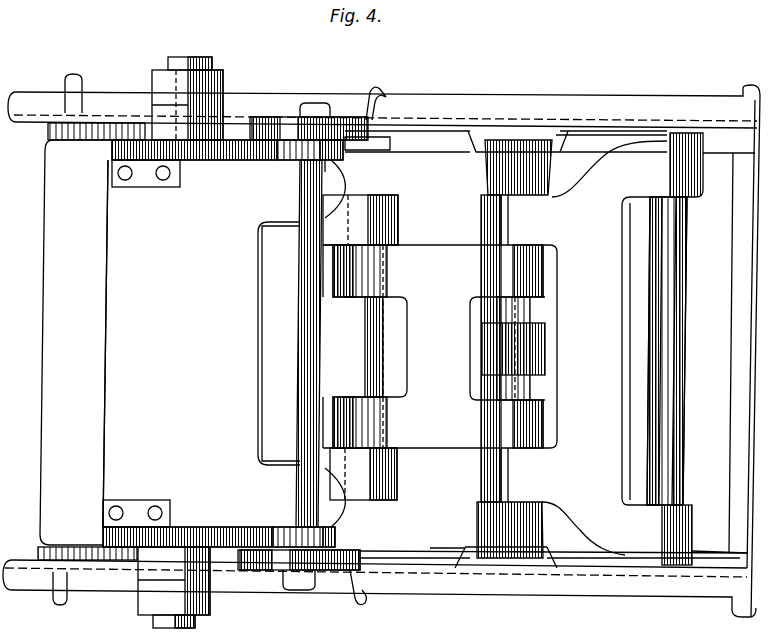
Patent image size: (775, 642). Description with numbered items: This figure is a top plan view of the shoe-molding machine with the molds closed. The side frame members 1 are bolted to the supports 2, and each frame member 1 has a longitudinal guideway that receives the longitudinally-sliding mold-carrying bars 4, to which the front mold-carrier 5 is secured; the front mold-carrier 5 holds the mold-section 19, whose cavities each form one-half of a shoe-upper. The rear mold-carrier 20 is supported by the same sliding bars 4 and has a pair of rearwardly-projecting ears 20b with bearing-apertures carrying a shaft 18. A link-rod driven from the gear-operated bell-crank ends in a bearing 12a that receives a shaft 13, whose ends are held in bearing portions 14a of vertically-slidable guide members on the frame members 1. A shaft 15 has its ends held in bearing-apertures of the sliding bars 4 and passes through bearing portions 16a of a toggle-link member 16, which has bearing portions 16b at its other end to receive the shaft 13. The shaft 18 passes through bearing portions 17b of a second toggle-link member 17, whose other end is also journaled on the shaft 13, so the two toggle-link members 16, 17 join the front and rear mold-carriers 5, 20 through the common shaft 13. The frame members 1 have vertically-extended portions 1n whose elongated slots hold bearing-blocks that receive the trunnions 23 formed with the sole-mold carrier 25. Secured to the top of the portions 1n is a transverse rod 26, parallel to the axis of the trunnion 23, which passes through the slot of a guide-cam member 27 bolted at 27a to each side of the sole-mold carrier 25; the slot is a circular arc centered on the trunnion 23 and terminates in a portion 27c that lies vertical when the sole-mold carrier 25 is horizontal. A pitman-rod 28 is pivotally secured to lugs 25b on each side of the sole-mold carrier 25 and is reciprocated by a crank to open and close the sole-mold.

The side frame member 1 is at (432, 108).
The vertically-extended portion 1n is at (292, 125).
The support 2 is at (735, 393).
The mold-carrying bar 4 is at (448, 134).
The front mold-carrier 5 is at (91, 341).
The bearing 12a is at (530, 363).
The shaft 13 is at (530, 310).
The bearing portion 14a is at (505, 172).
The shaft 15 is at (678, 298).
The toggle-link member 16 is at (606, 345).
The bearing portion 16a is at (690, 178).
The bearing portion 16b is at (516, 348).
The second toggle-link member 17 is at (440, 346).
The bearing portion 17b is at (364, 346).
The shaft 18 is at (375, 336).
The mold-section 19 is at (505, 612).
The rear mold-carrier 20 is at (279, 343).
The rearwardly-projecting ear 20b is at (392, 478).
The trunnion 23 is at (332, 175).
The sole-mold carrier 25 is at (145, 343).
The lug 25b is at (212, 50).
The transverse rod 26 is at (300, 200).
The guide-cam member 27 is at (205, 530).
The securing point 27a is at (155, 187).
The slot end portion 27c is at (302, 153).
The pitman-rod 28 is at (215, 95).